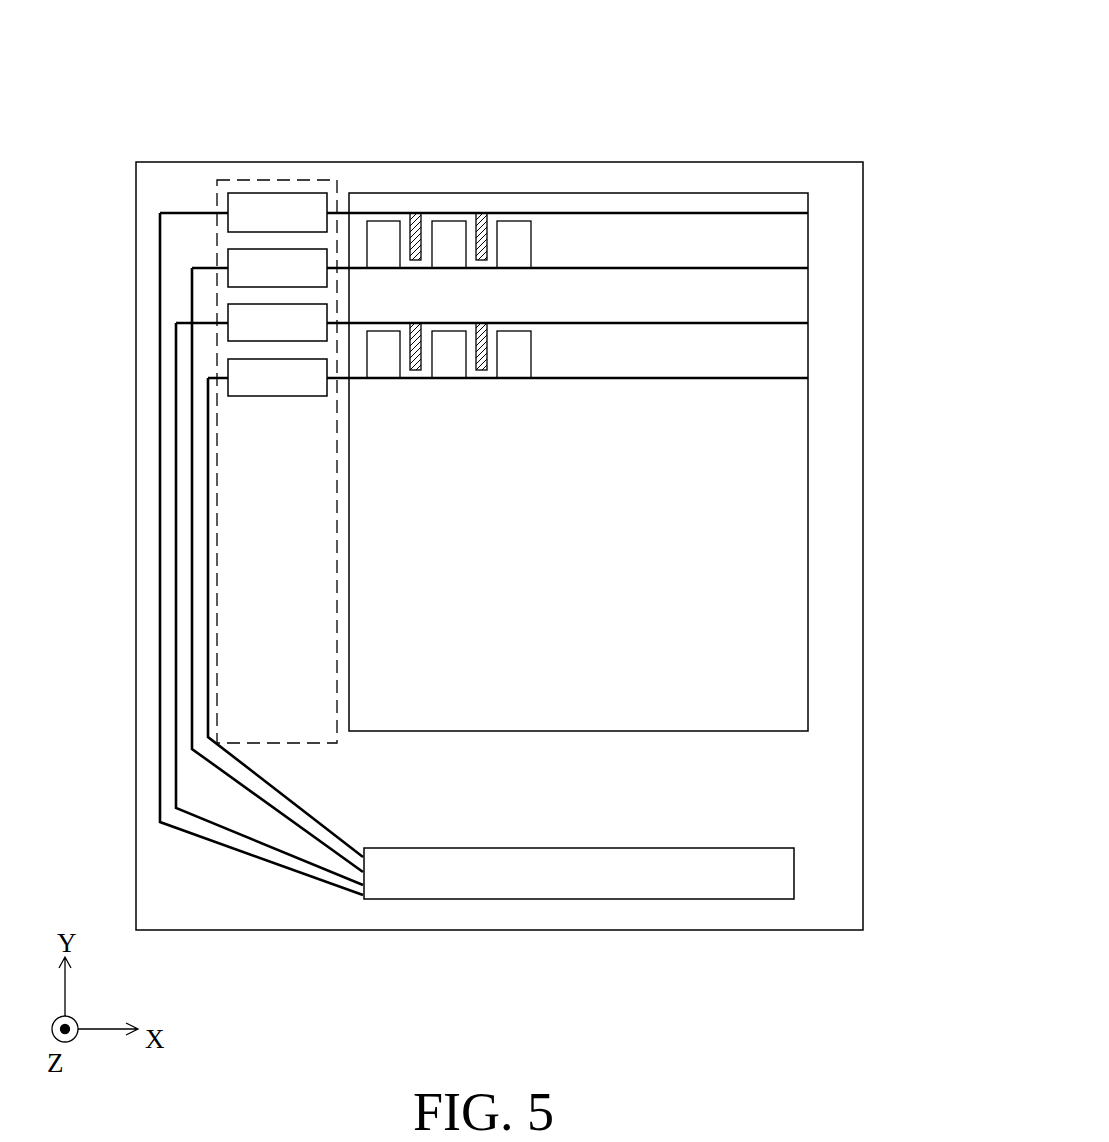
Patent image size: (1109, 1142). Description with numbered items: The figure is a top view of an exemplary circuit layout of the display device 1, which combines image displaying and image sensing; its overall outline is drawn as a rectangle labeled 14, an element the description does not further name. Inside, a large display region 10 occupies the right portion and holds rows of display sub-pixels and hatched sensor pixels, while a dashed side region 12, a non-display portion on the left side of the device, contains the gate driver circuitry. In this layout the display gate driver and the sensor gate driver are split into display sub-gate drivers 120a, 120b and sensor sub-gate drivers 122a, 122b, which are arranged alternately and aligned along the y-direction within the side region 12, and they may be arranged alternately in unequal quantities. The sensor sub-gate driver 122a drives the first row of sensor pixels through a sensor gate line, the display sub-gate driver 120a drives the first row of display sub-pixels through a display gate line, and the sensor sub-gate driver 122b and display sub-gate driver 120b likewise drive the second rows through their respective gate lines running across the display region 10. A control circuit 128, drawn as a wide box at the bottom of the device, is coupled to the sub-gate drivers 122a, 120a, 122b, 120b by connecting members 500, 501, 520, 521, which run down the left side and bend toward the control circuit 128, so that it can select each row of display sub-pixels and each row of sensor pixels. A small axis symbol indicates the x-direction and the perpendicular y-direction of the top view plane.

The display device 1 is at (676, 68).
The substrate 14 is at (798, 163).
The display region 10 is at (658, 732).
The side region 12 is at (337, 743).
The control circuit 128 is at (598, 887).
The sensor sub-gate driver 122a is at (303, 227).
The display sub-gate driver 120a is at (303, 283).
The sensor sub-gate driver 122b is at (303, 337).
The display sub-gate driver 120b is at (303, 393).
The connecting member 500 is at (220, 843).
The connecting member 501 is at (268, 848).
The connecting member 520 is at (282, 810).
The connecting member 521 is at (350, 838).